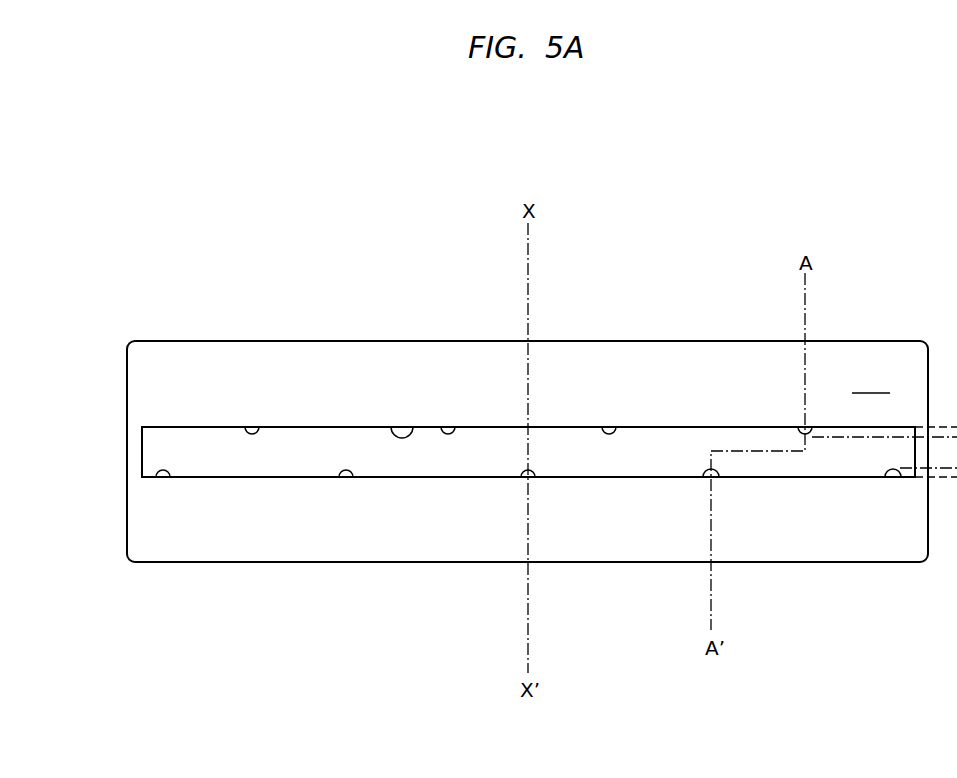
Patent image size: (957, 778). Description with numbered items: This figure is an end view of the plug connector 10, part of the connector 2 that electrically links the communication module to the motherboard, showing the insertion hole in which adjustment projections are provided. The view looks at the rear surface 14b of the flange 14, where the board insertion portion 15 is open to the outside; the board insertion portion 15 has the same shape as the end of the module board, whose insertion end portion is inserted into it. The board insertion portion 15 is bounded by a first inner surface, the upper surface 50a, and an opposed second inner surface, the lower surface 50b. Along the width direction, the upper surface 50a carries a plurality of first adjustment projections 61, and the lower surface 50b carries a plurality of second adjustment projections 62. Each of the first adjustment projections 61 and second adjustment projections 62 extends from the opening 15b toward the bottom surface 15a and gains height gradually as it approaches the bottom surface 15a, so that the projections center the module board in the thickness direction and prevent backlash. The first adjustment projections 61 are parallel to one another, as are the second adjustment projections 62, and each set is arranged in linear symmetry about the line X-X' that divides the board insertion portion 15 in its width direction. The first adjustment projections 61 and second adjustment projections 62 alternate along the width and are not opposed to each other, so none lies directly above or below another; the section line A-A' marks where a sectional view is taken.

The connector 2 is at (539, 336).
The plug connector 10 is at (539, 384).
The flange 14 is at (922, 340).
The rear surface 14b is at (871, 383).
The board insertion portion 15 is at (523, 464).
The bottom surface 15a is at (198, 447).
The opening 15b is at (288, 427).
The upper surface 50a is at (528, 354).
The lower surface 50b is at (528, 553).
The first adjustment projections 61 is at (797, 428).
The second adjustment projections 62 is at (717, 473).